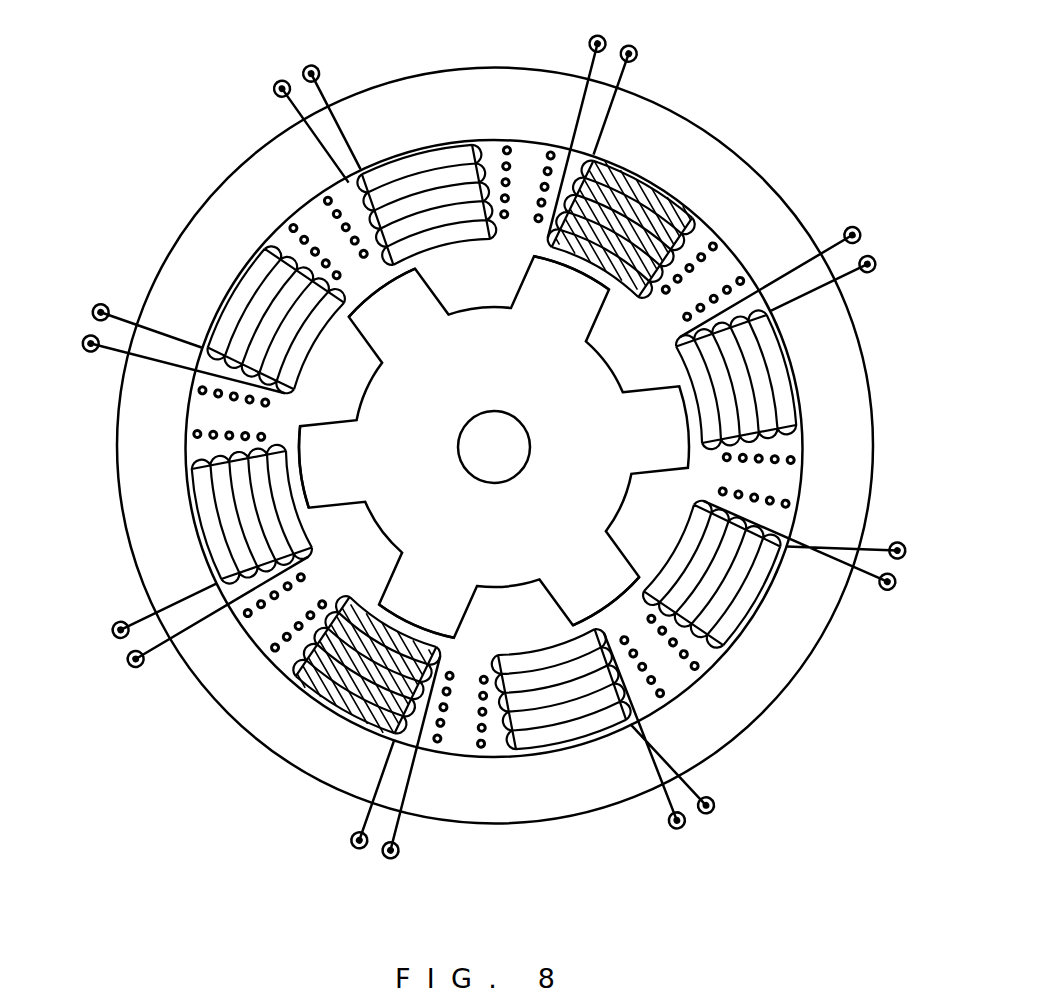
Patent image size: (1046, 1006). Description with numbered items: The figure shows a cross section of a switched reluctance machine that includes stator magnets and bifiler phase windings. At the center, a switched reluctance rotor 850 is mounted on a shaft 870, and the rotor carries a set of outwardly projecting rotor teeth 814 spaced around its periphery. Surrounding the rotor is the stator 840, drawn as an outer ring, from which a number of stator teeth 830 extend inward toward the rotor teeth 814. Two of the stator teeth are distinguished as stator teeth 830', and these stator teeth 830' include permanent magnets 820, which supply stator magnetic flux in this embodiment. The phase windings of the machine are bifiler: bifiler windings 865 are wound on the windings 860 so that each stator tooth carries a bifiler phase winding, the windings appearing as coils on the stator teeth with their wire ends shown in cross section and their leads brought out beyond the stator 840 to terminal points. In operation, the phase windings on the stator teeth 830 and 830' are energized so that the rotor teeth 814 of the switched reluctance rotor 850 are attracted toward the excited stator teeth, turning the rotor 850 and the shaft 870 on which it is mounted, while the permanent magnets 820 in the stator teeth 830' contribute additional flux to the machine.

The rotor teeth 814 is at (420, 327).
The permanent magnets 820 is at (603, 279).
The stator teeth 830 is at (495, 367).
The stator teeth including permanent magnets 830' is at (512, 448).
The stator 840 is at (584, 798).
The switched reluctance rotor 850 is at (520, 370).
The windings 860 is at (282, 81).
The bifiler windings 865 is at (506, 148).
The shaft 870 is at (522, 446).